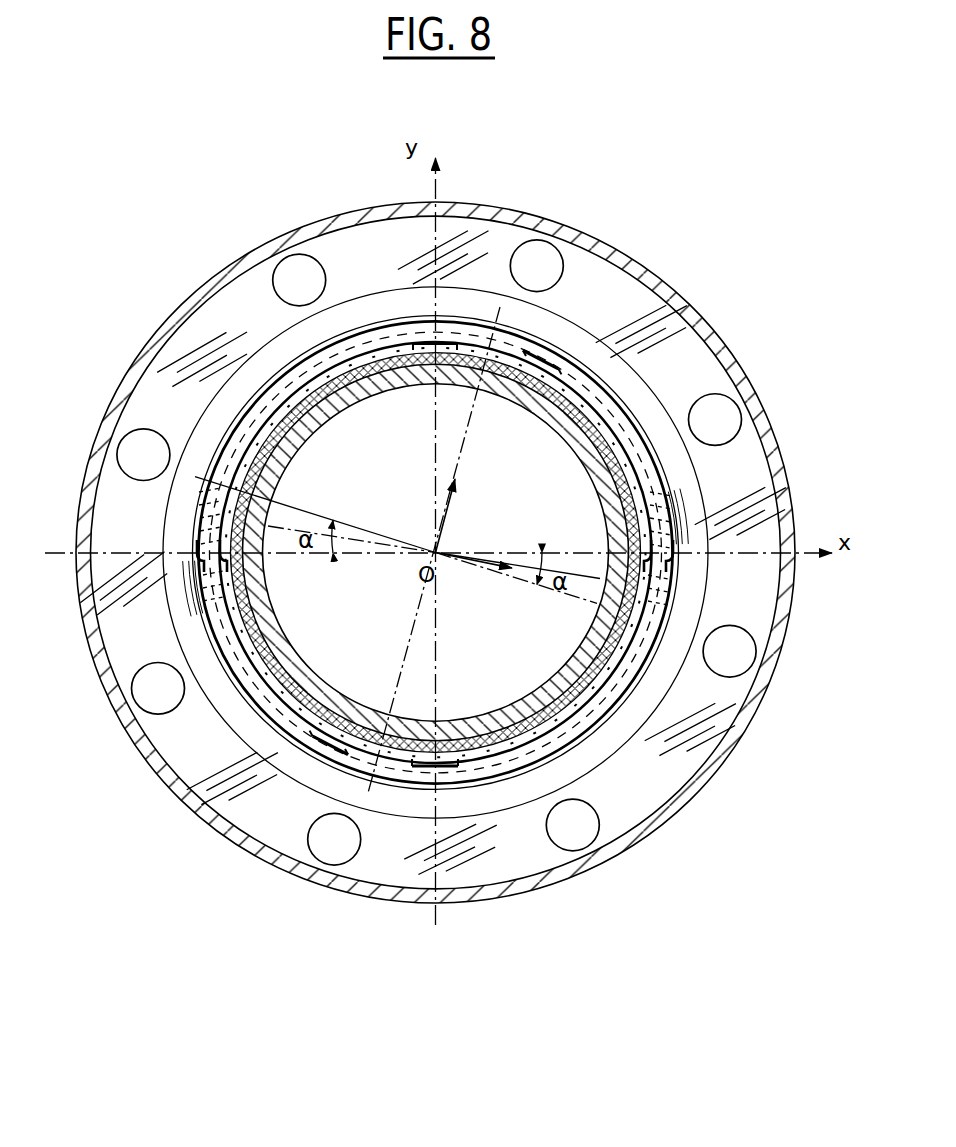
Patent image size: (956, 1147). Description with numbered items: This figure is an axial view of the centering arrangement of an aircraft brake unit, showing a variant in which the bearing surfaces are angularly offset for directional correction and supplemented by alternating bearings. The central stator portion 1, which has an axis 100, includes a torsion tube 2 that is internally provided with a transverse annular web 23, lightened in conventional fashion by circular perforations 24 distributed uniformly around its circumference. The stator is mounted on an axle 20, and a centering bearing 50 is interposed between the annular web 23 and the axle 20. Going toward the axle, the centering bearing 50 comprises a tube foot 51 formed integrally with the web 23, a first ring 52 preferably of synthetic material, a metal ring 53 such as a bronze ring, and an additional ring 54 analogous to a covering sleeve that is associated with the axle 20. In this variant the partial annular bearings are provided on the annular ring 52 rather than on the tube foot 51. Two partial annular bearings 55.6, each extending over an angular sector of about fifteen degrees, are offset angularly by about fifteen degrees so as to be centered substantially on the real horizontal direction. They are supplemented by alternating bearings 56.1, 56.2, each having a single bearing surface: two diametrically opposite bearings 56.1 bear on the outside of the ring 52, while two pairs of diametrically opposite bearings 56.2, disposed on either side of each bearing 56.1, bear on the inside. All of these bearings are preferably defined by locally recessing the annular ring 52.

The central stator portion 1 is at (672, 287).
The torsion tube 2 is at (692, 322).
The axle 20 is at (352, 713).
The transverse annular web 23 is at (743, 447).
The circular perforations 24 is at (530, 244).
The centering bearing 50 is at (605, 343).
The tube foot 51 is at (626, 372).
The first ring 52 is at (657, 482).
The metal ring 53 is at (242, 613).
The additional ring 54 is at (283, 677).
The partial annular bearings 55.6 is at (200, 498).
The bearings 56.1 is at (520, 355).
The bearings 56.2 is at (430, 343).
The axis 100 is at (440, 550).